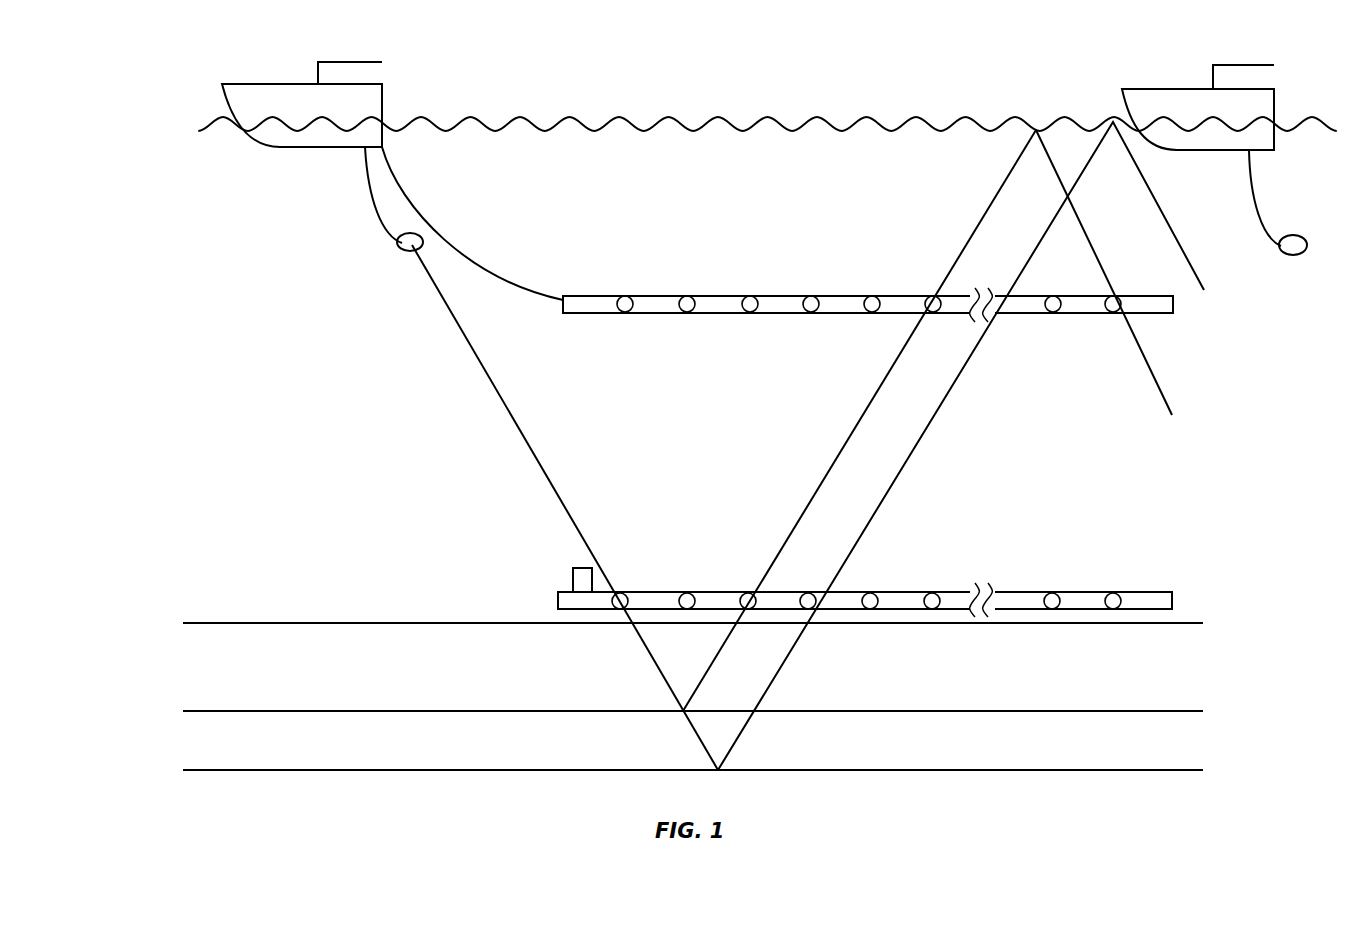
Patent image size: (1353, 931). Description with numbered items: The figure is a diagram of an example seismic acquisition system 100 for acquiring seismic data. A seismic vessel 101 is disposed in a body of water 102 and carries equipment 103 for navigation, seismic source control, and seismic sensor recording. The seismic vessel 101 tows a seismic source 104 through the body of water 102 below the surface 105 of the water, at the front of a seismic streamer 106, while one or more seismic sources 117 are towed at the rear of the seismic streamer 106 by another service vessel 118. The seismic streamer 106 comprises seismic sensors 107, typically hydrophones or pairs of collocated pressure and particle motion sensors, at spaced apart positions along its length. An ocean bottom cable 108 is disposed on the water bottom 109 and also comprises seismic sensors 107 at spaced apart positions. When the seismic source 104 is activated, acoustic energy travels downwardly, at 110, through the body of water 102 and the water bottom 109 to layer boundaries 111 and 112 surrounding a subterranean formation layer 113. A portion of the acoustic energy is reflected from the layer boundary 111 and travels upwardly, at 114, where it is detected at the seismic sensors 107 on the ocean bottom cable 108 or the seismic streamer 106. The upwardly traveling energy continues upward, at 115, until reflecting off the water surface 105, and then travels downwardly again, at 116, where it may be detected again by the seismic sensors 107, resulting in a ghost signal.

The seismic acquisition system 100 is at (233, 454).
The seismic vessel 101 is at (280, 82).
The body of water 102 is at (313, 390).
The equipment 103 is at (352, 60).
The seismic source 104 is at (423, 248).
The surface of the water 105 is at (718, 116).
The seismic streamer 106 is at (714, 268).
The seismic sensors 107 is at (873, 295).
The ocean bottom cable 108 is at (712, 570).
The water bottom 109 is at (333, 622).
The downwardly traveling acoustic energy 110 is at (527, 446).
The layer boundary 111 is at (333, 710).
The layer boundary 112 is at (333, 769).
The subterranean formation layer 113 is at (475, 735).
The upwardly traveling acoustic energy 114 is at (851, 435).
The upwardly traveling acoustic energy 115 is at (988, 209).
The downwardly traveling acoustic energy 116 is at (1096, 253).
The seismic source 117 is at (1292, 256).
The service vessel 118 is at (1176, 88).